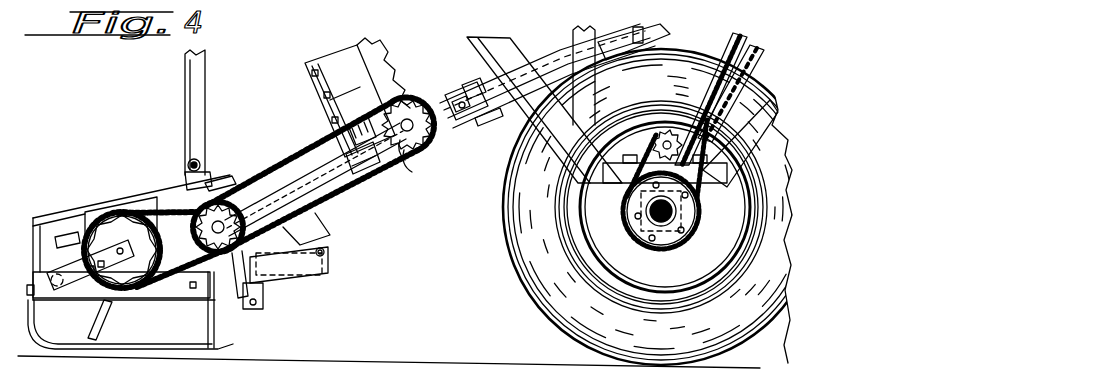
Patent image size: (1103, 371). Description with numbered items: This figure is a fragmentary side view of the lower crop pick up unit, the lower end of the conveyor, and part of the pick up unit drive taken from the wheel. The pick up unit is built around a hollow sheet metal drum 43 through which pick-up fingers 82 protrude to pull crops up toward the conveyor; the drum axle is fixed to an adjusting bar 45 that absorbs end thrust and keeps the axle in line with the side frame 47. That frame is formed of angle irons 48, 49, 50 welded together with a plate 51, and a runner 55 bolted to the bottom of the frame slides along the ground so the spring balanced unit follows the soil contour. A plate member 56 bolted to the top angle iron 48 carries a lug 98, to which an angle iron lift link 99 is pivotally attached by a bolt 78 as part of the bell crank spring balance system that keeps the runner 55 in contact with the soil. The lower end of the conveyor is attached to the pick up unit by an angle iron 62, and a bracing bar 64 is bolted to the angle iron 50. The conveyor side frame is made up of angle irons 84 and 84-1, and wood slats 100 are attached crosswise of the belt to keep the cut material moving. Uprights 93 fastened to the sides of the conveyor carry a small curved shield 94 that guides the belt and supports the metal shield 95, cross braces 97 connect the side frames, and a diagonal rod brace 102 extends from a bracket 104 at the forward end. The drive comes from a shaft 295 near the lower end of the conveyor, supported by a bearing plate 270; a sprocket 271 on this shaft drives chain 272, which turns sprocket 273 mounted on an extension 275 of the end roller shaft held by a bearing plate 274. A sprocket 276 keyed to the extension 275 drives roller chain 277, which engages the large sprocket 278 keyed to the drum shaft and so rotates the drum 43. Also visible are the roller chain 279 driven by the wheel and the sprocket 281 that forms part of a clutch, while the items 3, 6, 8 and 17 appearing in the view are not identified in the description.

The wheel 3 is at (550, 300).
The bracket 6 is at (263, 302).
The axle housing 8 is at (620, 193).
The frame arm 17 is at (597, 88).
The hollow sheet metal drum 43 is at (80, 259).
The adjusting bar 45 is at (83, 292).
The crop pick up side frame 47 is at (87, 126).
The top angle iron 48 is at (62, 215).
The angle iron 49 is at (30, 215).
The angle iron 50 is at (77, 285).
The plate 51 is at (127, 190).
The runner 55 is at (145, 338).
The plate member 56 is at (216, 183).
The angle iron 62 is at (323, 247).
The bracing bar 64 is at (287, 278).
The bolt 78 is at (196, 162).
The pick-up fingers 82 is at (100, 328).
The angle iron 84 is at (505, 106).
The angle iron 84-1 is at (478, 74).
The uprights 93 is at (315, 92).
The small curved shield 94 is at (313, 120).
The metal shield 95 is at (357, 44).
The cross braces 97 is at (643, 40).
The lug 98 is at (186, 182).
The angle iron link 99 is at (205, 76).
The wood slats 100 is at (548, 37).
The diagonal rod brace 102 is at (487, 110).
The bracket 104 is at (457, 90).
The bearing plate 270 is at (420, 142).
The sprocket 271 is at (410, 155).
The chain 272 is at (402, 162).
The sprocket 273 is at (247, 206).
The bearing plate 274 is at (242, 178).
The extension shaft 275 is at (197, 234).
The sprocket 276 is at (200, 250).
The roller chain 277 is at (124, 286).
The large sprocket 278 is at (125, 288).
The roller chain 279 is at (653, 237).
The sprocket 281 is at (678, 98).
The shaft 295 is at (400, 100).